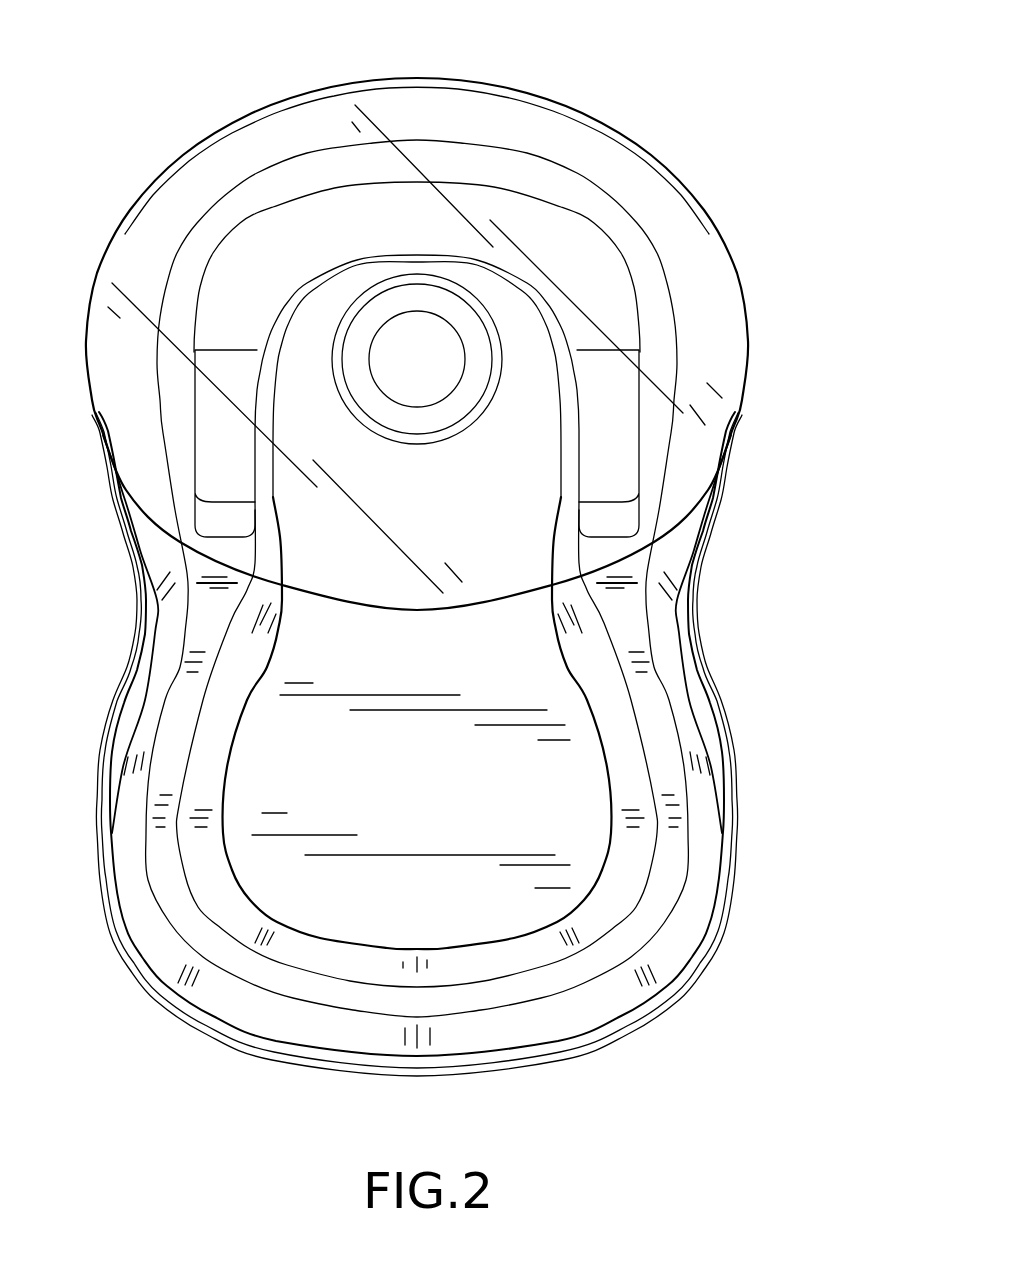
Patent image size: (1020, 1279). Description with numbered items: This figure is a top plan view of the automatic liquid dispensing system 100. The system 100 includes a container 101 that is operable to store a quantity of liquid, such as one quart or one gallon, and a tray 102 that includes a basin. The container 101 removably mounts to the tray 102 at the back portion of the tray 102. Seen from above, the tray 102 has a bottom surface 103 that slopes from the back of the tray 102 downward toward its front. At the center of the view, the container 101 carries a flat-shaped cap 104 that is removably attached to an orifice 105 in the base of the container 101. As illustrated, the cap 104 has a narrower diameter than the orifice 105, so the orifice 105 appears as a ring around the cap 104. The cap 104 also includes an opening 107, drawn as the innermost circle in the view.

The automatic liquid dispensing system 100 is at (453, 542).
The container 101 is at (743, 293).
The tray 102 is at (698, 645).
The bottom surface 103 is at (273, 783).
The cap 104 is at (473, 380).
The orifice 105 is at (440, 437).
The opening 107 is at (420, 377).